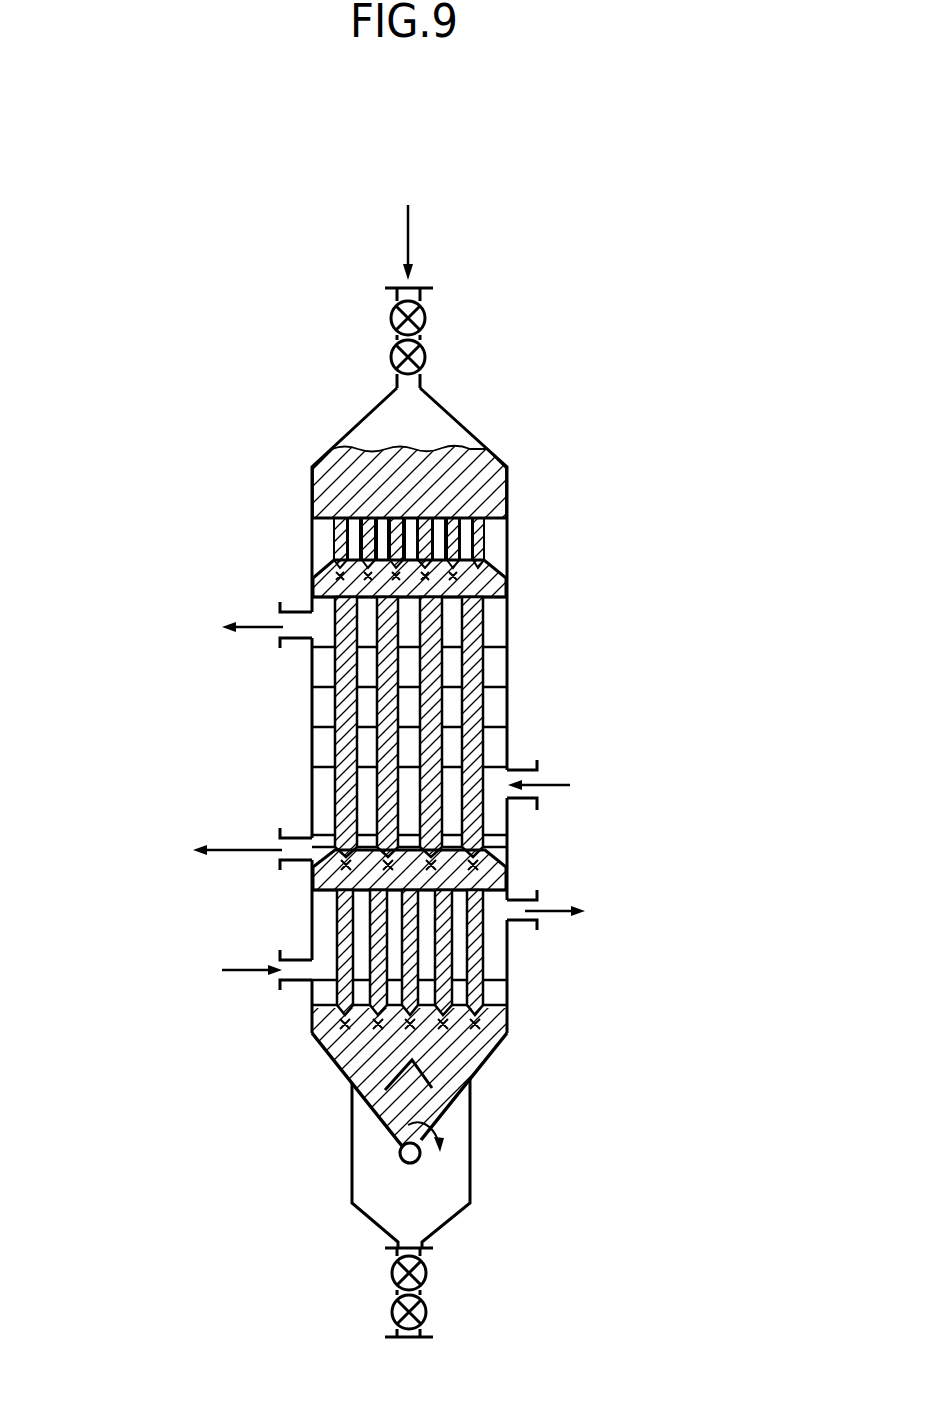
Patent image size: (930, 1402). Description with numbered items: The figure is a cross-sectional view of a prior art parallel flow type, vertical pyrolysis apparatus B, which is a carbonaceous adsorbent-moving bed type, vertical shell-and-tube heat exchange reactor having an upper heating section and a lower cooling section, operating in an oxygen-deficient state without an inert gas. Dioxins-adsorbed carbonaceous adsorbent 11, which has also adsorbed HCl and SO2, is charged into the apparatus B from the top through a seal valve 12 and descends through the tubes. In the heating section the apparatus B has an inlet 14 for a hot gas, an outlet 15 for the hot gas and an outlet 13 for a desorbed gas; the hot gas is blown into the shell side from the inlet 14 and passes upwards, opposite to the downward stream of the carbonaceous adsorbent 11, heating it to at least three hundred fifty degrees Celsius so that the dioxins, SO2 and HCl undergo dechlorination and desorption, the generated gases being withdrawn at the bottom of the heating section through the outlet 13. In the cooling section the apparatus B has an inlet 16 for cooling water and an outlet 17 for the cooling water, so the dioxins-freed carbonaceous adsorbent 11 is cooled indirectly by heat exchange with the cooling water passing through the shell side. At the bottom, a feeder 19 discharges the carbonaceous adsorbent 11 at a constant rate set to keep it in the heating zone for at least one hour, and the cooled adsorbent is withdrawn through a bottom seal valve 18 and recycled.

The carbonaceous adsorbent 11 is at (412, 238).
The seal valve 12 is at (426, 360).
The outlet for desorbed gas 13 is at (297, 837).
The inlet for hot gas 14 is at (520, 765).
The outlet for hot gas 15 is at (297, 608).
The inlet for cooling water 16 is at (298, 982).
The outlet for cooling water 17 is at (520, 925).
The seal valve 18 is at (427, 1270).
The feeder 19 is at (399, 1157).
The parallel flow type, vertical pyrolysis apparatus B is at (600, 431).